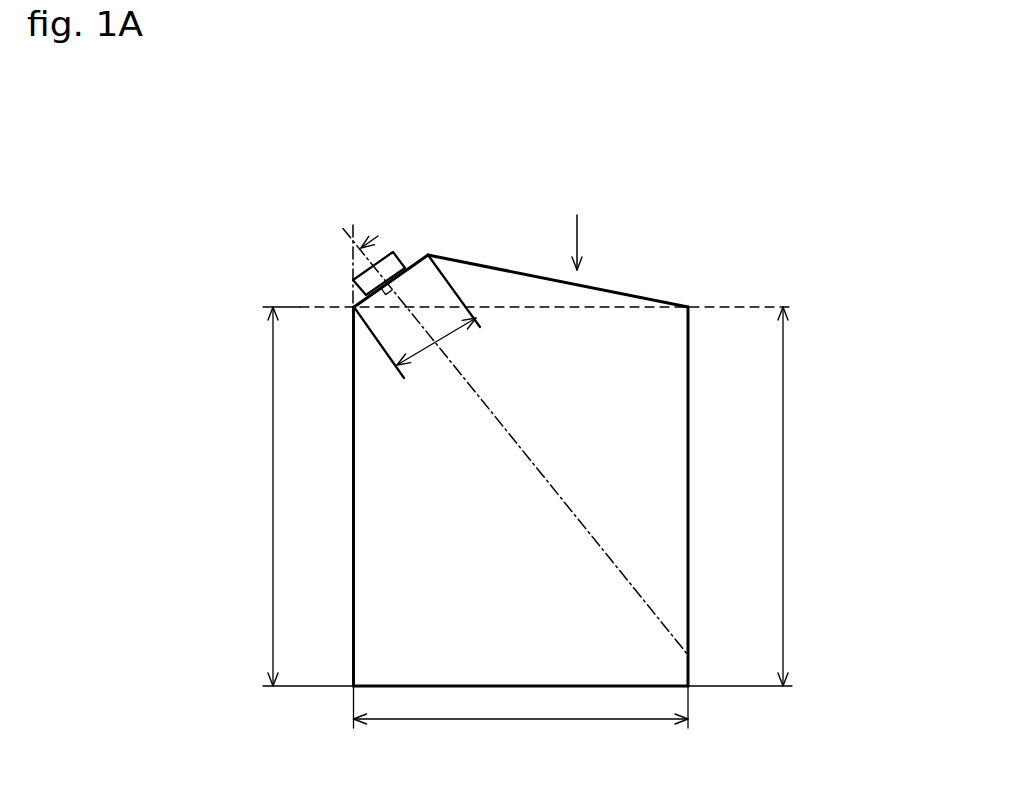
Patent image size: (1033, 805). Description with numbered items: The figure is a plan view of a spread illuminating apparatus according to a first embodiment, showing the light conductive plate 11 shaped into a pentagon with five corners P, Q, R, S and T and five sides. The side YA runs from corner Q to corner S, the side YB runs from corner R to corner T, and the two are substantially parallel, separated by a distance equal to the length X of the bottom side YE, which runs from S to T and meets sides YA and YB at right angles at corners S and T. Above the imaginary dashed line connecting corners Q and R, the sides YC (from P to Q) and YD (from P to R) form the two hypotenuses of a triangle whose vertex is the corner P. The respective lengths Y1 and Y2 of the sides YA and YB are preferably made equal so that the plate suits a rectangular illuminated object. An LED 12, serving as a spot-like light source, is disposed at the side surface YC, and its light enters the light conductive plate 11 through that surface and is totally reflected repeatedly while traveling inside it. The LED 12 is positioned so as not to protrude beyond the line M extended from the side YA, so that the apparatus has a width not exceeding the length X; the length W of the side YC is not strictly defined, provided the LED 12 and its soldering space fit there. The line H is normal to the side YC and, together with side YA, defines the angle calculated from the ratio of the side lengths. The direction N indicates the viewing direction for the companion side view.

The light conductive plate 11 is at (527, 448).
The LED 12 is at (393, 252).
The side YA is at (352, 530).
The side YB is at (690, 430).
The side YC is at (411, 264).
The side YD is at (620, 293).
The side YE is at (658, 684).
The length of the side YC W is at (428, 346).
The line normal to the side YC H is at (538, 468).
The direction N is at (581, 222).
The line extended from the side YA M is at (352, 273).
The angle P is at (429, 254).
The angle R is at (690, 307).
The angle Q is at (378, 341).
The angle S is at (350, 689).
The angle T is at (691, 688).
The length of the side YE X is at (521, 735).
The length of the side YA Y1 is at (254, 496).
The length of the side YB Y2 is at (803, 496).